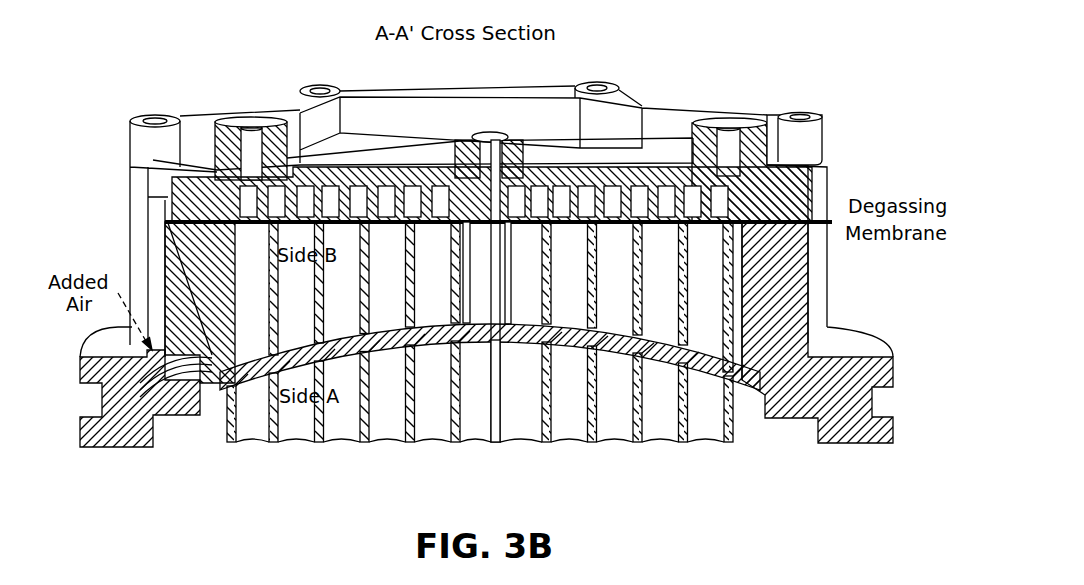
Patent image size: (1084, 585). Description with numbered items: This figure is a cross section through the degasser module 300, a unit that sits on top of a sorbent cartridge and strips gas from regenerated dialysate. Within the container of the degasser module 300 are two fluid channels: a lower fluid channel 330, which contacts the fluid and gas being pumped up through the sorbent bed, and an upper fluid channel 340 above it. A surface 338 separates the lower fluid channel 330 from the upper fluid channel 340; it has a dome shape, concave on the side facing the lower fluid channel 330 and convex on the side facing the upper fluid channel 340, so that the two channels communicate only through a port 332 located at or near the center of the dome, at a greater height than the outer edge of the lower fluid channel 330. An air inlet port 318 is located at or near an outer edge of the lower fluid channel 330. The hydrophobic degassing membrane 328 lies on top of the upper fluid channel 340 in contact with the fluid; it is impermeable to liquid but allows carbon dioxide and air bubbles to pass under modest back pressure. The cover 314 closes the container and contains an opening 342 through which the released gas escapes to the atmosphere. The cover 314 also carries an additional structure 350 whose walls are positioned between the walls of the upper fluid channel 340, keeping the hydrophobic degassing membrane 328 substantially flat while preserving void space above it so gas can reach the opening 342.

The degasser module 300 is at (705, 68).
The cover 314 is at (822, 135).
The air inlet port 318 is at (173, 396).
The hydrophobic degassing membrane 328 is at (698, 226).
The lower fluid channel 330 is at (614, 408).
The port 332 is at (480, 352).
The surface 338 is at (566, 350).
The upper fluid channel 340 is at (283, 298).
The opening 342 is at (492, 140).
The additional structure 350 is at (265, 198).